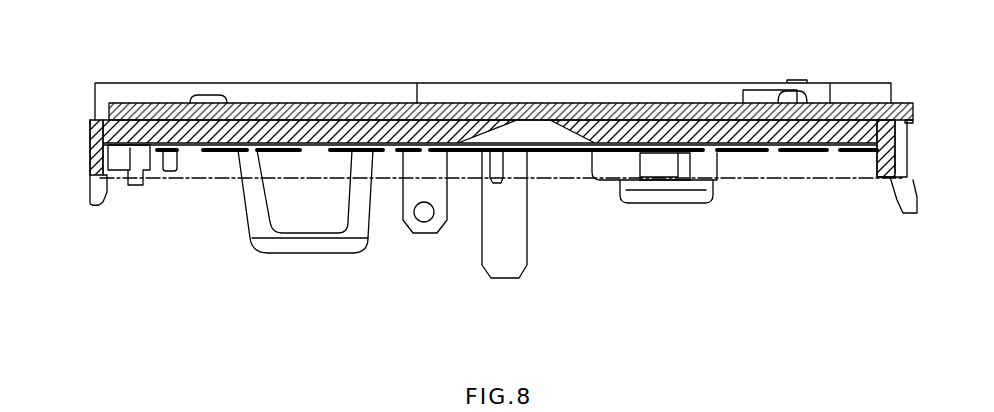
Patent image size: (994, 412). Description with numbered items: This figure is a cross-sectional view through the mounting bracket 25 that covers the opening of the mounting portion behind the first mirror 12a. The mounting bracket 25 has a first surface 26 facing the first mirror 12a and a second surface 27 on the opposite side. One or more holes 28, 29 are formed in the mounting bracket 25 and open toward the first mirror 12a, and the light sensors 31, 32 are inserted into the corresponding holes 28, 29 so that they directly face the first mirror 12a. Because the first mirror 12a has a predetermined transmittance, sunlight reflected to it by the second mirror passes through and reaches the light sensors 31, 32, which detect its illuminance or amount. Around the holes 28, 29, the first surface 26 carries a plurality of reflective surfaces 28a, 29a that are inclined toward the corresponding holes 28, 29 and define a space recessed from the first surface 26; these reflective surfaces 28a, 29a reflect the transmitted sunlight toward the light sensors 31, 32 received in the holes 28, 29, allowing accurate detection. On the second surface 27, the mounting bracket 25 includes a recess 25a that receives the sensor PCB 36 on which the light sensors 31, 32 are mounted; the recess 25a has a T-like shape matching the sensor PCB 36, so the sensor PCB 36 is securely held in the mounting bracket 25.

The first mirror 12a is at (208, 180).
The mounting bracket 25 is at (84, 133).
The recess 25a is at (287, 120).
The first surface 26 is at (321, 160).
The second surface 27 is at (684, 90).
The hole 28 is at (511, 64).
The hole 29 is at (537, 105).
The reflective surface 28a is at (538, 218).
The reflective surface 29a is at (476, 153).
The light sensor 31 is at (492, 115).
The light sensor 32 is at (544, 112).
The sensor PCB 36 is at (373, 105).